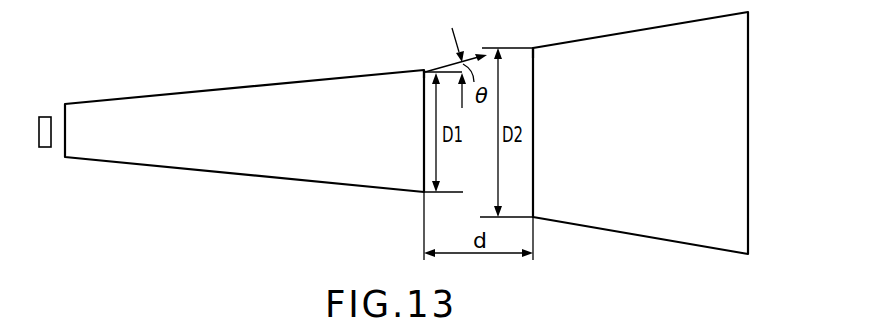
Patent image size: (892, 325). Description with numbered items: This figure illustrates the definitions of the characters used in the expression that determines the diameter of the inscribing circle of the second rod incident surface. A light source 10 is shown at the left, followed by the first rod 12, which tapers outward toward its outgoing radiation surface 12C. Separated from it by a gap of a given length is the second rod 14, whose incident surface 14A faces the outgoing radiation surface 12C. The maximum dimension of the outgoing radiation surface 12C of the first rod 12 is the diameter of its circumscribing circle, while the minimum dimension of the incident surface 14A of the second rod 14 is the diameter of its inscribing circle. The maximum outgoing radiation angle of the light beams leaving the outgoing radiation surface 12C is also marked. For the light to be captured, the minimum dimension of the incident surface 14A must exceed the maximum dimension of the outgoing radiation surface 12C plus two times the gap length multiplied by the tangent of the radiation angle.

The light source 10 is at (44, 147).
The first rod 12 is at (209, 162).
The outgoing radiation surface 12C is at (431, 72).
The second rod 14 is at (582, 220).
The incident surface 14A is at (531, 48).